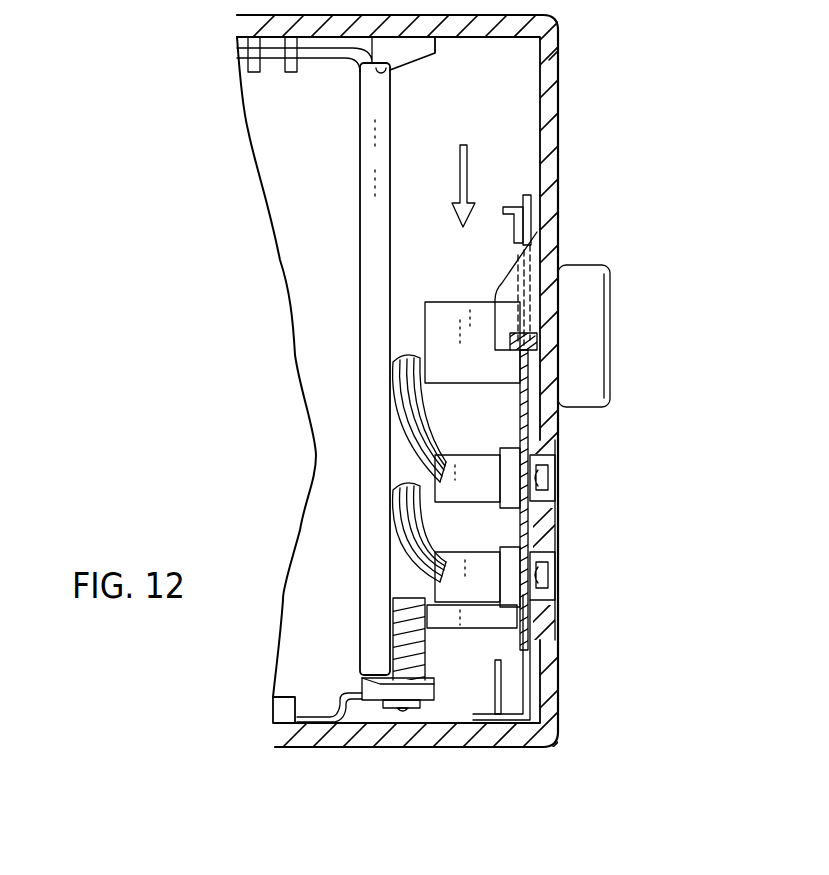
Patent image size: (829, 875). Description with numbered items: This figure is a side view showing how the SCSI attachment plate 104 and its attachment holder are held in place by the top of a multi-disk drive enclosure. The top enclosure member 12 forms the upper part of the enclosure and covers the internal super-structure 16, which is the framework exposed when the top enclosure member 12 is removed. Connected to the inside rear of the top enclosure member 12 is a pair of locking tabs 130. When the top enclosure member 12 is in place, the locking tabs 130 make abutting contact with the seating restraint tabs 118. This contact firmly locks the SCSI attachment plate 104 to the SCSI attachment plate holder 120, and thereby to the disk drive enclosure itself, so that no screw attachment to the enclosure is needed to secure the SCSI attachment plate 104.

The top enclosure member 12 is at (557, 133).
The super-structure 16 is at (396, 129).
The SCSI attachment plate 104 is at (518, 426).
The seating restraint tabs 118 is at (537, 340).
The SCSI attachment plate holder 120 is at (510, 202).
The locking tabs 130 is at (505, 263).